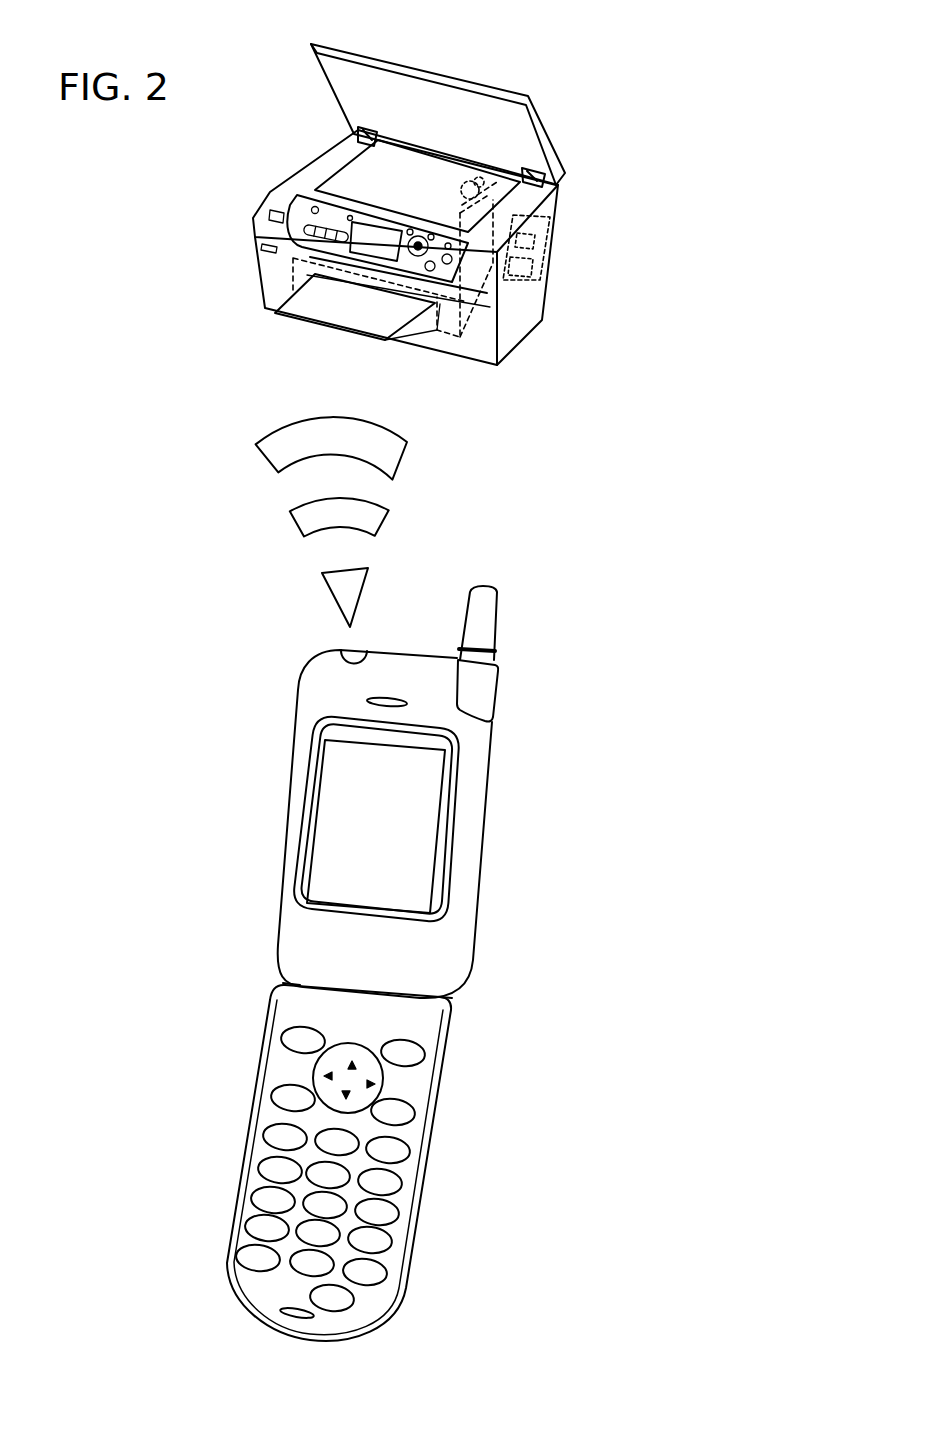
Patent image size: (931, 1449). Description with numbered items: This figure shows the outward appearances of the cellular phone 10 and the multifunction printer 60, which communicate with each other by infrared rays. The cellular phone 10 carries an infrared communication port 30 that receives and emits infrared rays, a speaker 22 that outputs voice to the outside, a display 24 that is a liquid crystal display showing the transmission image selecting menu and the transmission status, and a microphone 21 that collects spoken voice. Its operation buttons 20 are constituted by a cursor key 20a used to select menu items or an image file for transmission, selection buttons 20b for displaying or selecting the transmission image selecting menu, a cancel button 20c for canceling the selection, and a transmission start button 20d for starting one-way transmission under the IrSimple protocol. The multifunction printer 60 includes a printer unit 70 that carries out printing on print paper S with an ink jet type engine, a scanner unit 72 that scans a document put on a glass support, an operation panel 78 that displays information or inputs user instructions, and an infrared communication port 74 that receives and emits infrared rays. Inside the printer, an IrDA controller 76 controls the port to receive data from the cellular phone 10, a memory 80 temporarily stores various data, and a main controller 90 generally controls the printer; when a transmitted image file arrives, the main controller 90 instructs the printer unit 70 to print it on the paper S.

The multifunction printer 60 is at (461, 58).
The scanner unit 72 is at (480, 185).
The operation panel 78 is at (330, 217).
The infrared communication port 74 is at (270, 213).
The print paper S is at (340, 310).
The main controller 90 is at (557, 205).
The memory 80 is at (552, 226).
The IrDA controller 76 is at (548, 259).
The printer unit 70 is at (497, 293).
The cellular phone 10 is at (529, 556).
The infrared communication port 30 is at (350, 652).
The speaker 22 is at (386, 700).
The display 24 is at (400, 830).
The operation buttons 20 is at (545, 1143).
The cursor key 20a is at (373, 1071).
The selection buttons 20b is at (307, 1042).
The cancel button 20c is at (400, 1057).
The transmission start button 20d is at (395, 1113).
The microphone 21 is at (300, 1315).